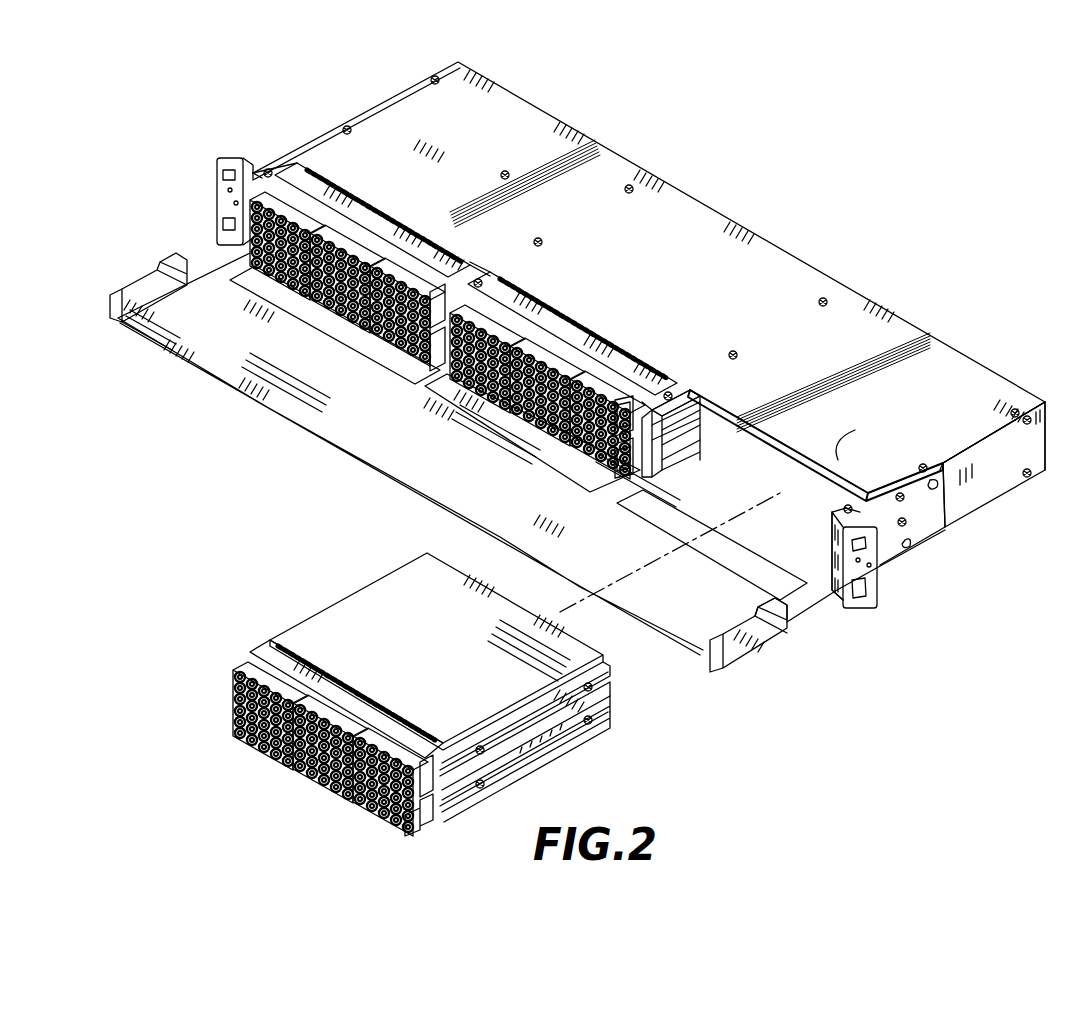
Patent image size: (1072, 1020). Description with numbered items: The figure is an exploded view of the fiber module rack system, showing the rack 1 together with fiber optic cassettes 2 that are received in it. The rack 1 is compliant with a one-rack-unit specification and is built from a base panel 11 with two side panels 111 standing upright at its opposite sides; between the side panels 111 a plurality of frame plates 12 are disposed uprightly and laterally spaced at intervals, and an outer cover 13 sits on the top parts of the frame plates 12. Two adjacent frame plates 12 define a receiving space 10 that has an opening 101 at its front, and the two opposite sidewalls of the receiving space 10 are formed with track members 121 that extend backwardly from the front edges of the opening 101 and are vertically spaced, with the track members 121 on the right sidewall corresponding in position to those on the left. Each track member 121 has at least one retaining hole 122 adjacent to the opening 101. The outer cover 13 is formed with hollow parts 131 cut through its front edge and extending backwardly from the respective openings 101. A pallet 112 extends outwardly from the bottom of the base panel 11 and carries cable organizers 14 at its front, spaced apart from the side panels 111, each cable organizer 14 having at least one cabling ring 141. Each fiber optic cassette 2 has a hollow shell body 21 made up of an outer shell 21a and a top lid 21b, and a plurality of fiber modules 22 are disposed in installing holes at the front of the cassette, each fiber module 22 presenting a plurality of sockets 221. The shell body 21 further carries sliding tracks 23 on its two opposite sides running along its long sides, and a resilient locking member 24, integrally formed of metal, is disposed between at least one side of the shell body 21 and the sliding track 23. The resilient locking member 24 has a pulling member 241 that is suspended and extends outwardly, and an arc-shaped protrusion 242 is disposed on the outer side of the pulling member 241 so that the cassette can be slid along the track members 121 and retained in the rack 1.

The rack 1 is at (577, 398).
The receiving space 10 is at (700, 487).
The opening 101 is at (838, 548).
The base panel 11 is at (913, 533).
The side panel 111 is at (1003, 485).
The pallet 112 is at (690, 625).
The frame plate 12 is at (632, 425).
The track member 121 is at (703, 420).
The retaining hole 122 is at (672, 430).
The outer cover 13 is at (990, 390).
The hollow part 131 is at (820, 463).
The cable organizer 14 is at (764, 664).
The cabling ring 141 is at (735, 650).
The fiber optic cassette 2 is at (408, 709).
The shell body 21 is at (393, 588).
The outer shell 21a is at (557, 720).
The top lid 21b is at (598, 670).
The fiber module 22 is at (238, 662).
The socket 221 is at (268, 678).
The sliding track 23 is at (515, 763).
The resilient locking member 24 is at (450, 797).
The pulling member 241 is at (400, 840).
The arc-shaped protrusion 242 is at (428, 820).